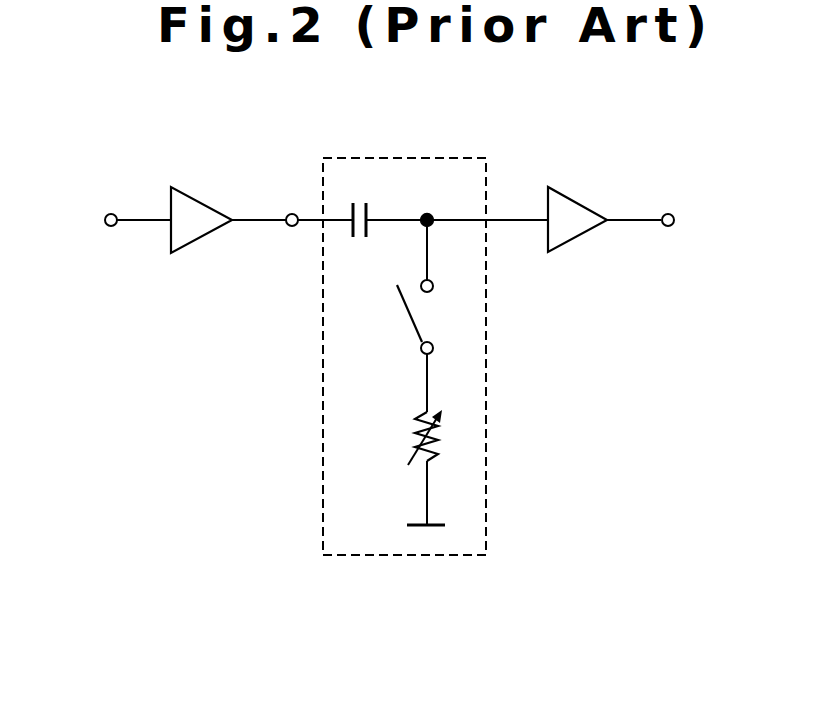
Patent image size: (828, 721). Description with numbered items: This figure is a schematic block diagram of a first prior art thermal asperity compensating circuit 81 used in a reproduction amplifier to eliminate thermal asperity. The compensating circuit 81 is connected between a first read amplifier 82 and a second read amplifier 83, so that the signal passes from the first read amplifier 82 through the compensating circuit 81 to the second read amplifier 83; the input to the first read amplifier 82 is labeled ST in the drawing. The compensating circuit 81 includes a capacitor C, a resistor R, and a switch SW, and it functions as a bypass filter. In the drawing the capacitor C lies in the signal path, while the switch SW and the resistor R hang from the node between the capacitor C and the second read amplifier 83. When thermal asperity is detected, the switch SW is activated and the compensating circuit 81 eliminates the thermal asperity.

The thermal asperity compensating circuit 81 is at (345, 158).
The first read amplifier 82 is at (197, 197).
The second read amplifier 83 is at (575, 198).
The input signal terminal ST is at (112, 220).
The capacitor C is at (367, 210).
The switch SW is at (410, 315).
The resistor R is at (420, 425).